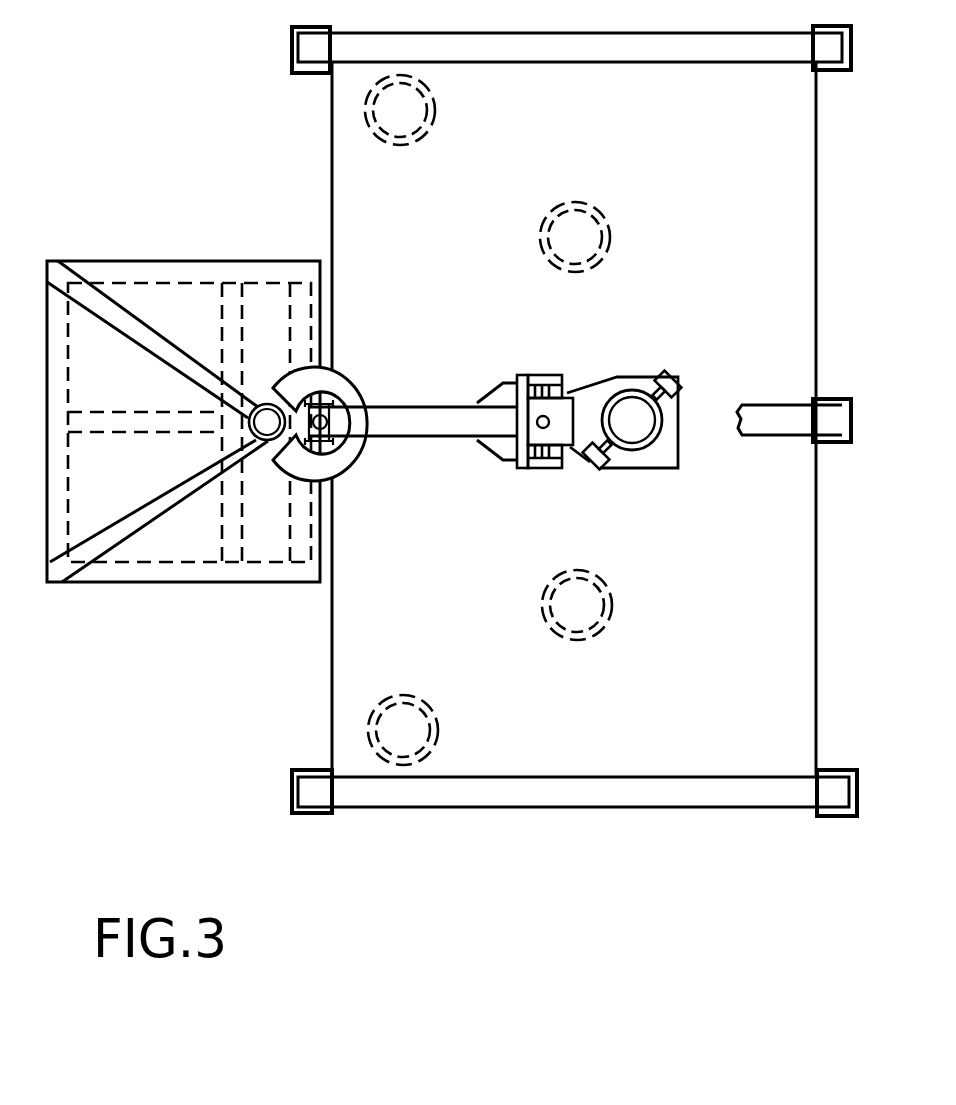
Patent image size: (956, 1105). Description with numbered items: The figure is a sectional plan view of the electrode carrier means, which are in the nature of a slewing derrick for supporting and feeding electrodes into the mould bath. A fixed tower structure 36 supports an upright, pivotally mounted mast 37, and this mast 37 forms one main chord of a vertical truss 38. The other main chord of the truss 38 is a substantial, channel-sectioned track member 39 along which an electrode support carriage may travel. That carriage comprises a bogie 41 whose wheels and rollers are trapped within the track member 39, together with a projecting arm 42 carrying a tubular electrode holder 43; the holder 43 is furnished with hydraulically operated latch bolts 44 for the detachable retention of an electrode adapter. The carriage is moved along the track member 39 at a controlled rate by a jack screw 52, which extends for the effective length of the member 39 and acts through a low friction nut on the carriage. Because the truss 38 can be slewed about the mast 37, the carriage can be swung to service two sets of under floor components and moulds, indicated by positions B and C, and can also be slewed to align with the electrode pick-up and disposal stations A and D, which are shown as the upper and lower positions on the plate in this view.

The fixed tower structure 36 is at (158, 267).
The mast 37 is at (318, 397).
The vertical truss 38 is at (434, 410).
The track member 39 is at (553, 383).
The bogie 41 is at (567, 393).
The projecting arm 42 is at (673, 408).
The tubular electrode holder 43 is at (657, 447).
The latch bolts 44 is at (594, 470).
The jack screw 52 is at (535, 423).
The electrode pick-up and disposal station A is at (480, 110).
The mould position B is at (643, 237).
The mould position C is at (647, 605).
The electrode pick-up and disposal station D is at (489, 730).